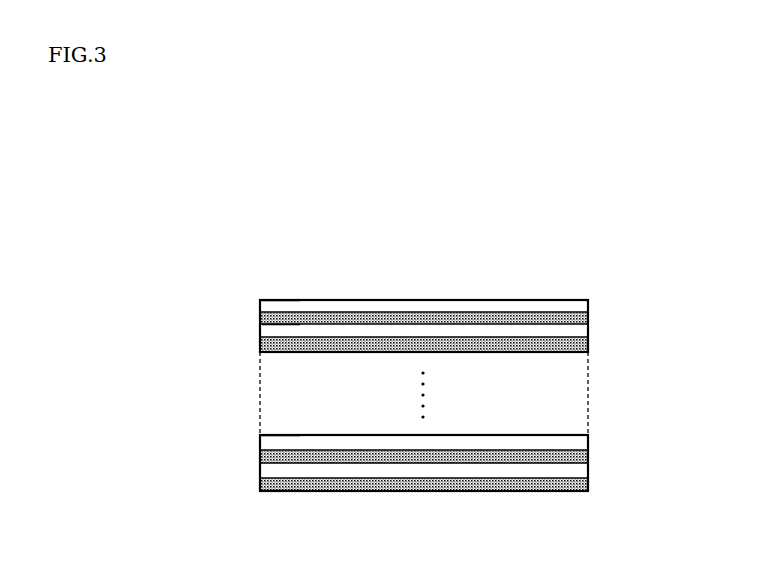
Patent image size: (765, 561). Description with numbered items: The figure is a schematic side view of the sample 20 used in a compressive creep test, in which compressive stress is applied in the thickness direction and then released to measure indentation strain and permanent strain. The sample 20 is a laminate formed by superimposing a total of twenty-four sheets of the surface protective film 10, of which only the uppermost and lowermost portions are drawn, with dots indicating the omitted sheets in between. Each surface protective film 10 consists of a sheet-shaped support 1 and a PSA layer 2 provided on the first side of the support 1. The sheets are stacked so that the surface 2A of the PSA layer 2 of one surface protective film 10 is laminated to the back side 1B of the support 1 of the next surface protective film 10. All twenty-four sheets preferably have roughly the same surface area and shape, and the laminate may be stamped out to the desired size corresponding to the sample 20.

The sample 20 is at (630, 204).
The surface protective film 10 is at (656, 259).
The PSA layer 2 is at (584, 305).
The support 1 is at (584, 317).
The surface of the PSA layer 2A is at (285, 300).
The back side of the support 1B is at (284, 327).